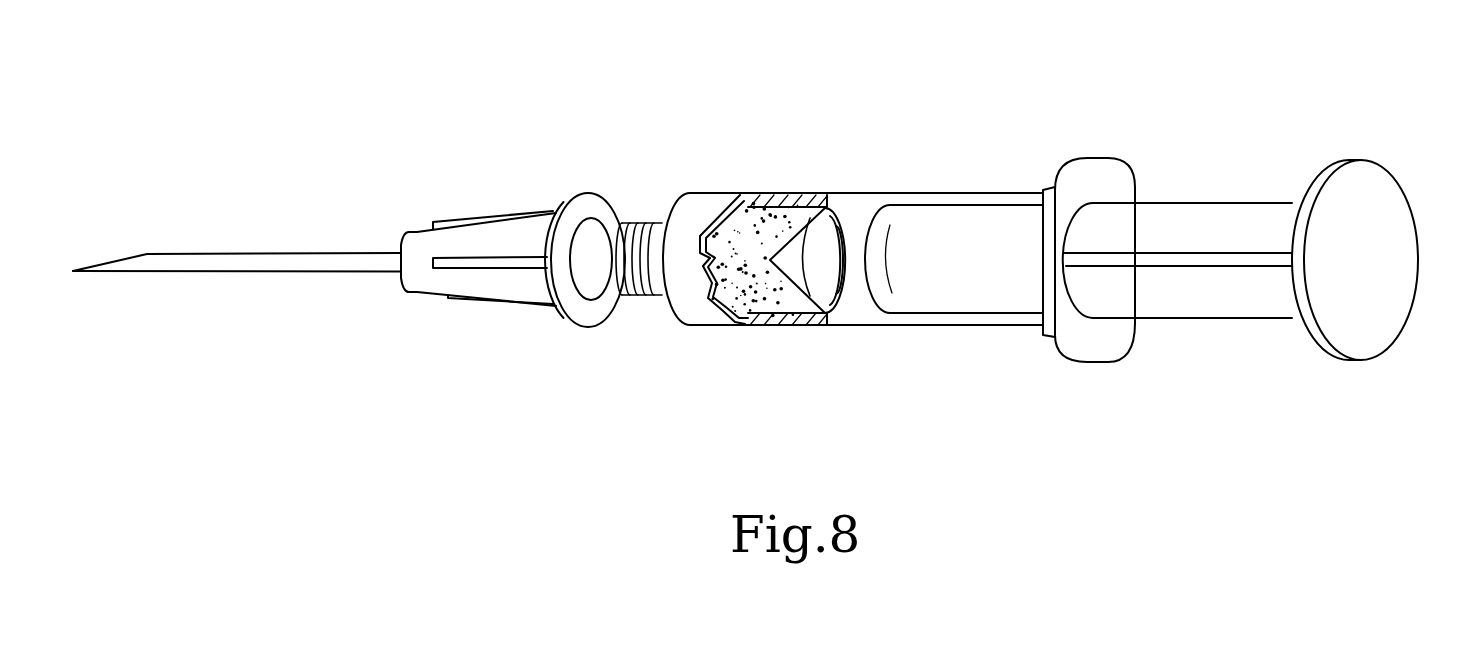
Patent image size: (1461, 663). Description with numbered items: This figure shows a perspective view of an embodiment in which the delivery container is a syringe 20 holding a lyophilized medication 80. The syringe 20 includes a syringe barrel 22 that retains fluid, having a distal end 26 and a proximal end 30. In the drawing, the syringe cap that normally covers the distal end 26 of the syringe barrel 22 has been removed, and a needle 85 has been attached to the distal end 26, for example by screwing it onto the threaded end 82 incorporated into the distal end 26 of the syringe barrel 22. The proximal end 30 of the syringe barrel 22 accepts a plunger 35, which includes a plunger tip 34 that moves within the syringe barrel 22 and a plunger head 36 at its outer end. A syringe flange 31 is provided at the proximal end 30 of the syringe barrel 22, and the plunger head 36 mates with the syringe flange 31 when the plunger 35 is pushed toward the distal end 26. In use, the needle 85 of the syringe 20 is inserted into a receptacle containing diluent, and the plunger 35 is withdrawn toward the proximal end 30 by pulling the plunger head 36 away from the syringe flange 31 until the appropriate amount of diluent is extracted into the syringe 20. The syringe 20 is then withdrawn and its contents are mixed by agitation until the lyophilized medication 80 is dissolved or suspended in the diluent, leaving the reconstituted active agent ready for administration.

The syringe 20 is at (523, 100).
The syringe barrel 22 is at (868, 326).
The distal end 26 is at (608, 197).
The proximal end 30 is at (1064, 162).
The syringe flange 31 is at (1102, 182).
The plunger tip 34 is at (787, 272).
The plunger 35 is at (1235, 204).
The plunger head 36 is at (1402, 182).
The lyophilized medication 80 is at (770, 218).
The threaded end 82 is at (648, 226).
The needle 85 is at (265, 252).